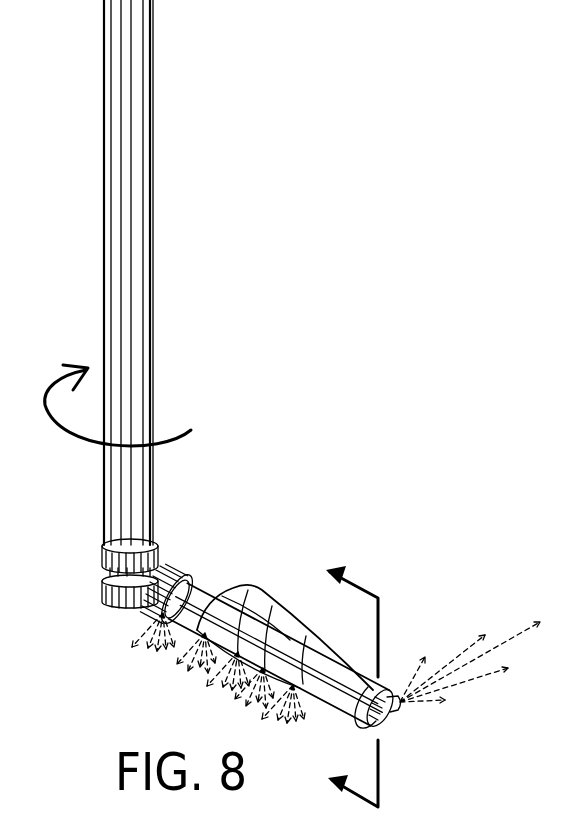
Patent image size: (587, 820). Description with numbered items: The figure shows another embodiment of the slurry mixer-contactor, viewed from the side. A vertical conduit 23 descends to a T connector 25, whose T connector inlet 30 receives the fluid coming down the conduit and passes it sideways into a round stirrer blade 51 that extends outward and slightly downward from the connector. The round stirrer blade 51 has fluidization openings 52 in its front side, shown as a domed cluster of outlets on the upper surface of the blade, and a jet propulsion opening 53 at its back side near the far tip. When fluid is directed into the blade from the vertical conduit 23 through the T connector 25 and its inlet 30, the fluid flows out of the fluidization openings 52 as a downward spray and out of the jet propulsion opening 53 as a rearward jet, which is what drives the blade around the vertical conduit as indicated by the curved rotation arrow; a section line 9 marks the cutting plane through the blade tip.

The vertical conduit 23 is at (147, 297).
The T connector inlet 30 is at (163, 548).
The T connector 25 is at (105, 598).
The round stirrer blade 51 is at (386, 722).
The fluidization openings 52 is at (263, 591).
The jet propulsion opening 53 is at (393, 712).
The section line 9- 9 is at (340, 679).